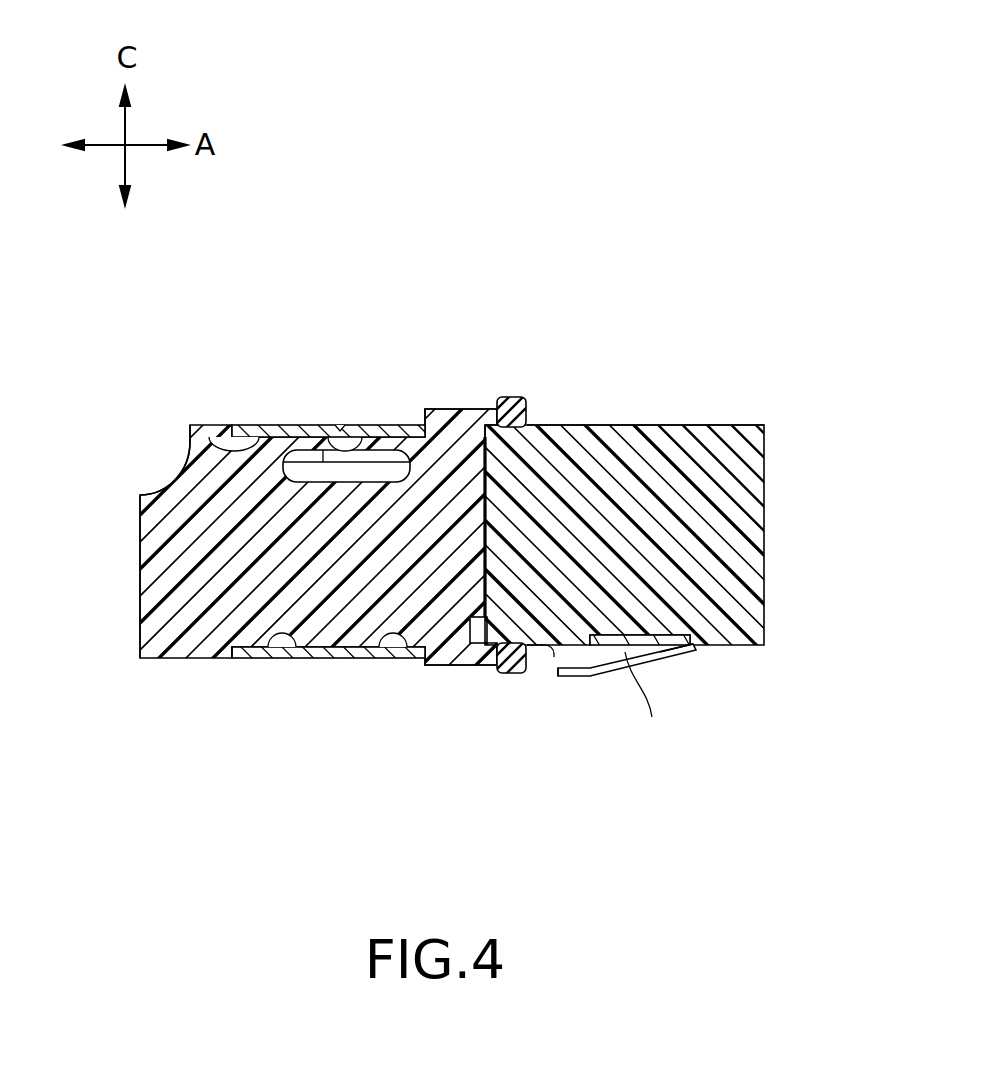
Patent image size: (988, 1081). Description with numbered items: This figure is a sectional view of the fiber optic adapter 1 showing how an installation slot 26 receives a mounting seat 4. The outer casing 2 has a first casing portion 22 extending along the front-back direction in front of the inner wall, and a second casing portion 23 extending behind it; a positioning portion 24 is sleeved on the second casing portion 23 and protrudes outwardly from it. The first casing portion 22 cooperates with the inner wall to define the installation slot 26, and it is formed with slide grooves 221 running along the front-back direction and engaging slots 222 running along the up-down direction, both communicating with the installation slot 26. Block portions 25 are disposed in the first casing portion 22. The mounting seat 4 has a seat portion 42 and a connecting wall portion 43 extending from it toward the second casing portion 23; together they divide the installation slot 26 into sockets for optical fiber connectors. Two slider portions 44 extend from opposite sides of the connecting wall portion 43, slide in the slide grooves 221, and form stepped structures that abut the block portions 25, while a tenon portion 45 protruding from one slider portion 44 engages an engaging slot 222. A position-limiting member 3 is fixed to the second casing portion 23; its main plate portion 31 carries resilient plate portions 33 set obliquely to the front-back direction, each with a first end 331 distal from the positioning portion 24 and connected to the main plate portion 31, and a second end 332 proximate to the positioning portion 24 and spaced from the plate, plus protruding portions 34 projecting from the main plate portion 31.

The fiber optic adapter 1 is at (437, 280).
The outer casing 2 is at (674, 404).
The first casing portion 22 is at (245, 660).
The slide grooves 221 is at (207, 430).
The engaging slots 222 is at (355, 432).
The second casing portion 23 is at (589, 430).
The positioning portion 24 is at (511, 395).
The block portions 25 is at (388, 660).
The installation slots 26 is at (240, 636).
The position-limiting member 3 is at (722, 684).
The main plate portion 31 is at (688, 640).
The resilient plate portions 33 is at (610, 697).
The first end 331 is at (670, 660).
The second end 332 is at (572, 678).
The protruding portions 34 is at (548, 660).
The mounting seat 4 is at (130, 431).
The seat portion 42 is at (148, 556).
The connecting wall portion 43 is at (301, 560).
The slider portions 44 is at (460, 478).
The tenon portion 45 is at (347, 428).